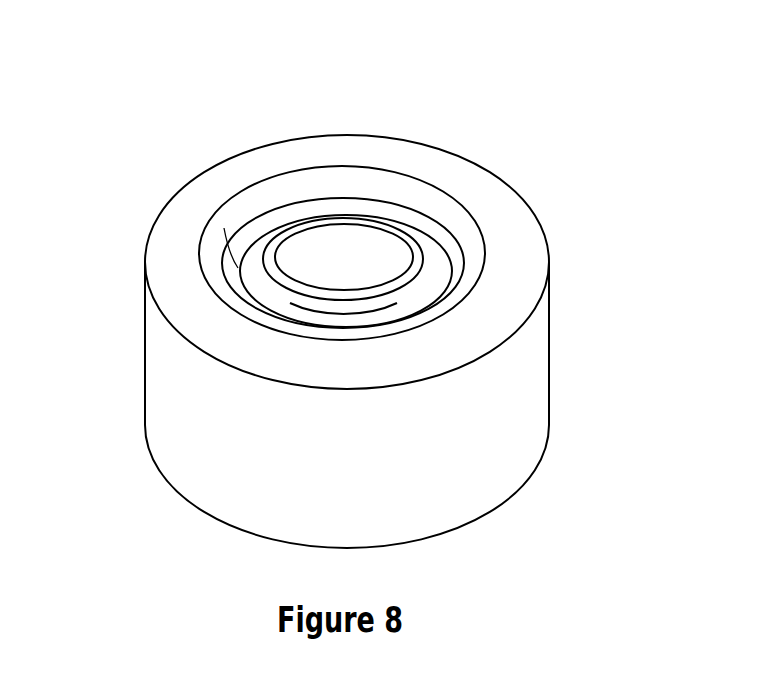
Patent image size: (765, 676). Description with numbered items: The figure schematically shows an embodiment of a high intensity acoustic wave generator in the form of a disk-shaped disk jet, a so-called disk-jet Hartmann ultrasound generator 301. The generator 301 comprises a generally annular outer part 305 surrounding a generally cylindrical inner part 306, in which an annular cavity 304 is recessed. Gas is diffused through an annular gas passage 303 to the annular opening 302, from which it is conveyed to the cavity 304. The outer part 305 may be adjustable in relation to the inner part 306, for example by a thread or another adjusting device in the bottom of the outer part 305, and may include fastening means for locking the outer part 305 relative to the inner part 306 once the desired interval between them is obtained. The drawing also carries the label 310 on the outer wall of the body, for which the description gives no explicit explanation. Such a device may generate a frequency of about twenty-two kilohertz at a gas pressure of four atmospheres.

The high intensity ultrasound generator 301 is at (360, 288).
The annular opening 302 is at (248, 228).
The annular gas passage 303 is at (207, 216).
The annular cavity 304 is at (428, 270).
The outer part 305 is at (348, 147).
The inner part 306 is at (333, 237).
The housing 310 is at (556, 353).